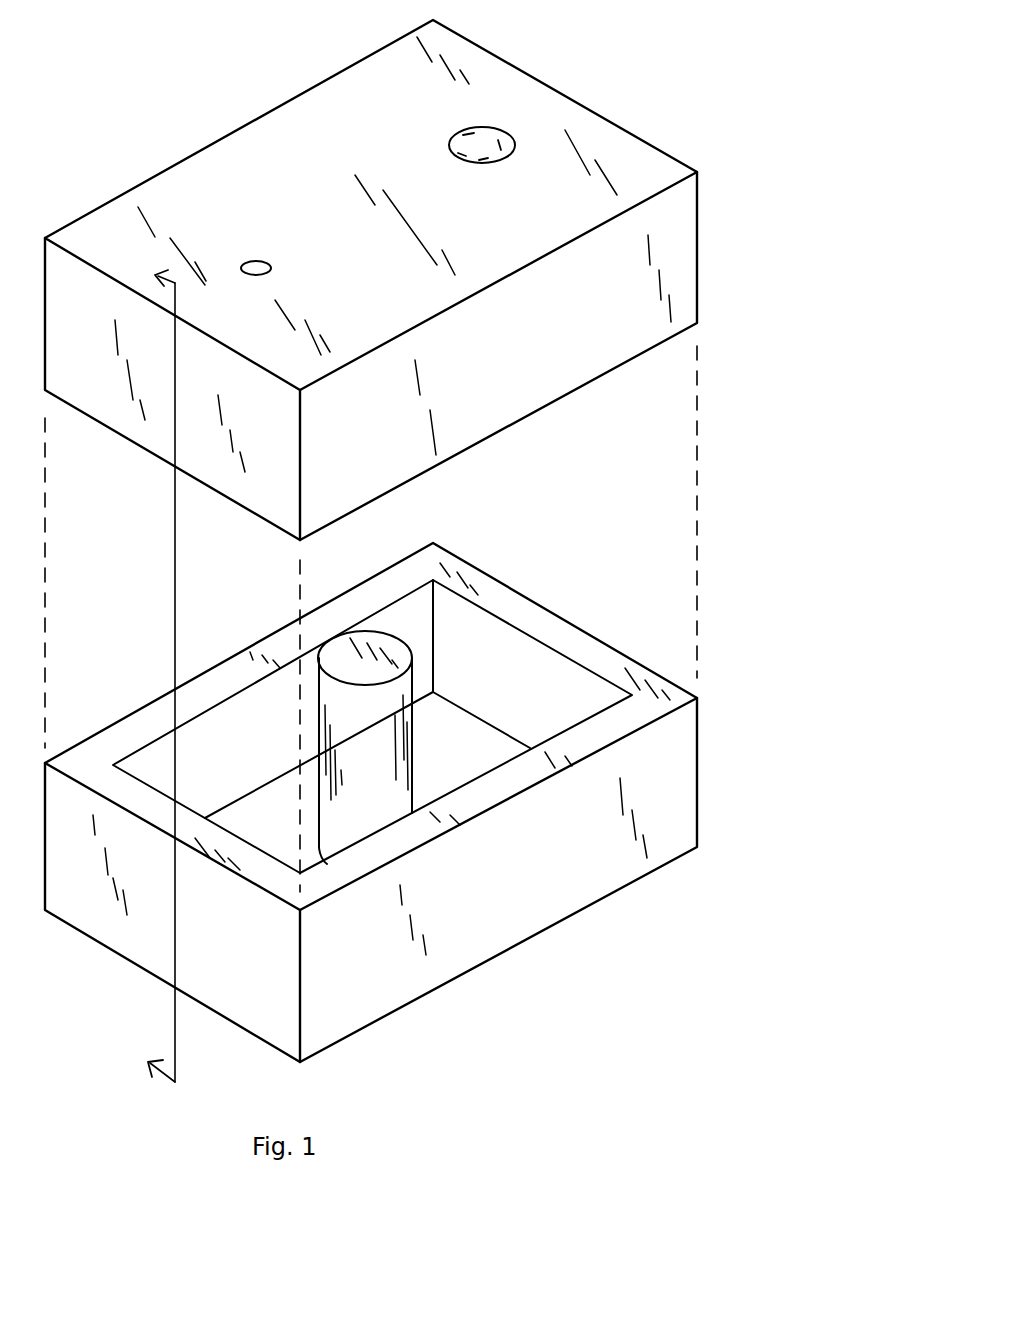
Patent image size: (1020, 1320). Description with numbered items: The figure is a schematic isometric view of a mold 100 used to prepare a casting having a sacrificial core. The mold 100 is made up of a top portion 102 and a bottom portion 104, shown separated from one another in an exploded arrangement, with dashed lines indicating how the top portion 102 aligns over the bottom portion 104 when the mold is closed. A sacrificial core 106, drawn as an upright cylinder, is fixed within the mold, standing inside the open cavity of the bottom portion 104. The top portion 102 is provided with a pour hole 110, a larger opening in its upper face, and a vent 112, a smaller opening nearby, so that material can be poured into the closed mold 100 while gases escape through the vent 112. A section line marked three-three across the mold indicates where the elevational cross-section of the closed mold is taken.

The mold 100 is at (770, 313).
The top portion 102 is at (387, 280).
The bottom portion 104 is at (426, 802).
The sacrificial core 106 is at (413, 722).
The pour hole 110 is at (494, 128).
The vent 112 is at (252, 261).